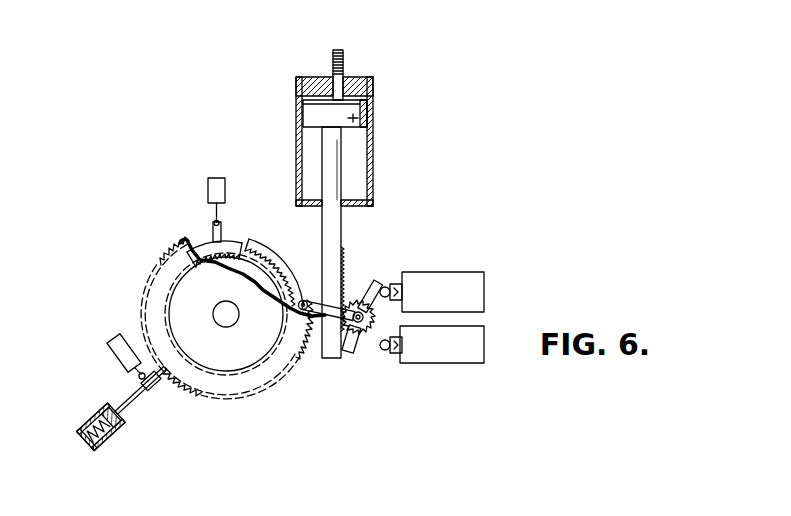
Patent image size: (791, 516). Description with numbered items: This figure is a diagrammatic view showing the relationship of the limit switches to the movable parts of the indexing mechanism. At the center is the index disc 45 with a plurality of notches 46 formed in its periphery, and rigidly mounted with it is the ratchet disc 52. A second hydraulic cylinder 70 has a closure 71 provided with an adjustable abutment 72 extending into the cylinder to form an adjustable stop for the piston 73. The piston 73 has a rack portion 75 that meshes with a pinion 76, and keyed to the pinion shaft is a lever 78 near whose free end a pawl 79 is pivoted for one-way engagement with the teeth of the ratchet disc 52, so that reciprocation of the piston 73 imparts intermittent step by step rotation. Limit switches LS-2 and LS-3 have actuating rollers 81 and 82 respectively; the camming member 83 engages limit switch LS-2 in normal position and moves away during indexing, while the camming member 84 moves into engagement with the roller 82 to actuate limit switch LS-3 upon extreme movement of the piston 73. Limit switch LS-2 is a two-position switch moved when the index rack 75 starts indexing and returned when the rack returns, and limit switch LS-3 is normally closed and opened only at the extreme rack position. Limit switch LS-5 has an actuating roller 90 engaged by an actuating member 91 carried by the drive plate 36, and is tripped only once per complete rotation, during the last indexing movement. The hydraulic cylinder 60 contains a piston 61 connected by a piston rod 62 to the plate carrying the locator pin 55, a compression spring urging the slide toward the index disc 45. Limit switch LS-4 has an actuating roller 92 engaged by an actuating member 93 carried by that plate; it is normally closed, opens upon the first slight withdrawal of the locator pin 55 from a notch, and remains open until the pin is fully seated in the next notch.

The drive plate 36 is at (236, 250).
The index disc 45 is at (288, 350).
The notches 46 is at (168, 255).
The ratchet disc 52 is at (267, 292).
The locator pin 55 is at (165, 374).
The hydraulic cylinder 60 is at (97, 452).
The piston 61 is at (93, 416).
The piston rod 62 is at (117, 425).
The second hydraulic cylinder 70 is at (373, 150).
The closure 71 is at (371, 88).
The adjustable abutment 72 is at (341, 66).
The piston 73 is at (352, 118).
The rack portion 75 is at (331, 247).
The pinion 76 is at (375, 318).
The lever 78 is at (306, 300).
The pawl 79 is at (258, 252).
The actuating roller 81 is at (387, 284).
The actuating roller 82 is at (388, 352).
The camming member 83 is at (370, 290).
The camming member 84 is at (352, 352).
The actuating roller 90 is at (213, 224).
The actuating member 91 is at (224, 228).
The actuating roller 92 is at (146, 364).
The actuating member 93 is at (139, 378).
The limit switch LS-2 is at (465, 284).
The limit switch LS-3 is at (483, 343).
The limit switch LS-4 is at (119, 348).
The limit switch LS-5 is at (218, 178).